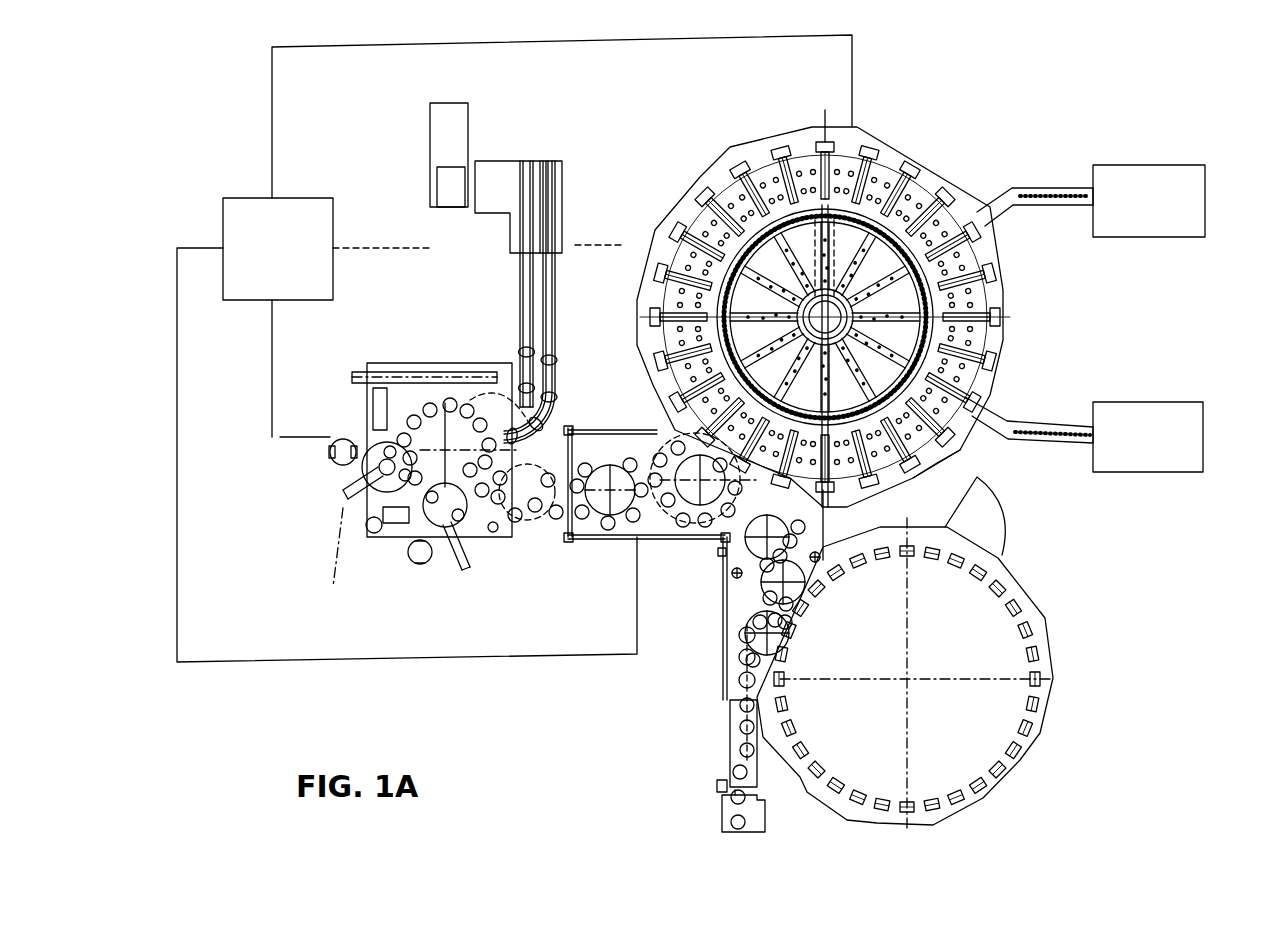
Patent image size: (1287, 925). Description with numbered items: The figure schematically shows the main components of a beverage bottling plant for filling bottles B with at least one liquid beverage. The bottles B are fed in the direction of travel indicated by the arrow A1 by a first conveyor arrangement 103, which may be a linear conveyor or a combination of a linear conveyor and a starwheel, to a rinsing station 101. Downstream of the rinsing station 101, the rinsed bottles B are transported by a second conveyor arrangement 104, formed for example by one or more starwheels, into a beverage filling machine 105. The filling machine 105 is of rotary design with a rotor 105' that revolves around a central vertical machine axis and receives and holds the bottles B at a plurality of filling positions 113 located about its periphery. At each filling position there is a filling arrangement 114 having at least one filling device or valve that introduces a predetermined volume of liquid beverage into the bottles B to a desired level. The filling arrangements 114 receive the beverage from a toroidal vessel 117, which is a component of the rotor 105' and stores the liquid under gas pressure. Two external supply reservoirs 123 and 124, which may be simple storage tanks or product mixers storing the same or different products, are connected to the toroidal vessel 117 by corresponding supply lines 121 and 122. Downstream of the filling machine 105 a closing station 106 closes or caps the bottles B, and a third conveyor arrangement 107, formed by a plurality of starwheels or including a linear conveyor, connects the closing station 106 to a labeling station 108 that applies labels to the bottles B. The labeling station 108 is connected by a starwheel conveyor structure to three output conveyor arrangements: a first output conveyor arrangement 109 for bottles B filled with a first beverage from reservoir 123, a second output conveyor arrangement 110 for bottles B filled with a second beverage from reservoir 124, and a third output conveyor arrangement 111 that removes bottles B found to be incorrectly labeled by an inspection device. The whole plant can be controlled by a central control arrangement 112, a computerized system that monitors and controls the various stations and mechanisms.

The rinsing station 101 is at (1072, 579).
The first conveyor arrangement 103 is at (757, 757).
The second conveyor arrangement 104 is at (733, 603).
The beverage filling machine 105 is at (887, 308).
The rotor 105' is at (820, 301).
The closing station 106 is at (628, 422).
The third conveyor arrangement 107 is at (577, 550).
The labeling station 108 is at (396, 580).
The first output conveyor arrangement 109 is at (552, 345).
The second output conveyor arrangement 110 is at (522, 288).
The third output conveyor arrangement 111 is at (405, 362).
The central control arrangement 112 is at (259, 263).
The filling positions 113 is at (1000, 250).
The filling arrangement 114 is at (1000, 333).
The toroidal vessel 117 is at (945, 463).
The supply line 121 is at (1042, 188).
The supply line 122 is at (1043, 418).
The external supply reservoir 123 is at (1197, 208).
The external supply reservoir 124 is at (1200, 446).
The arrow A1 is at (703, 752).
The bottles B is at (748, 773).